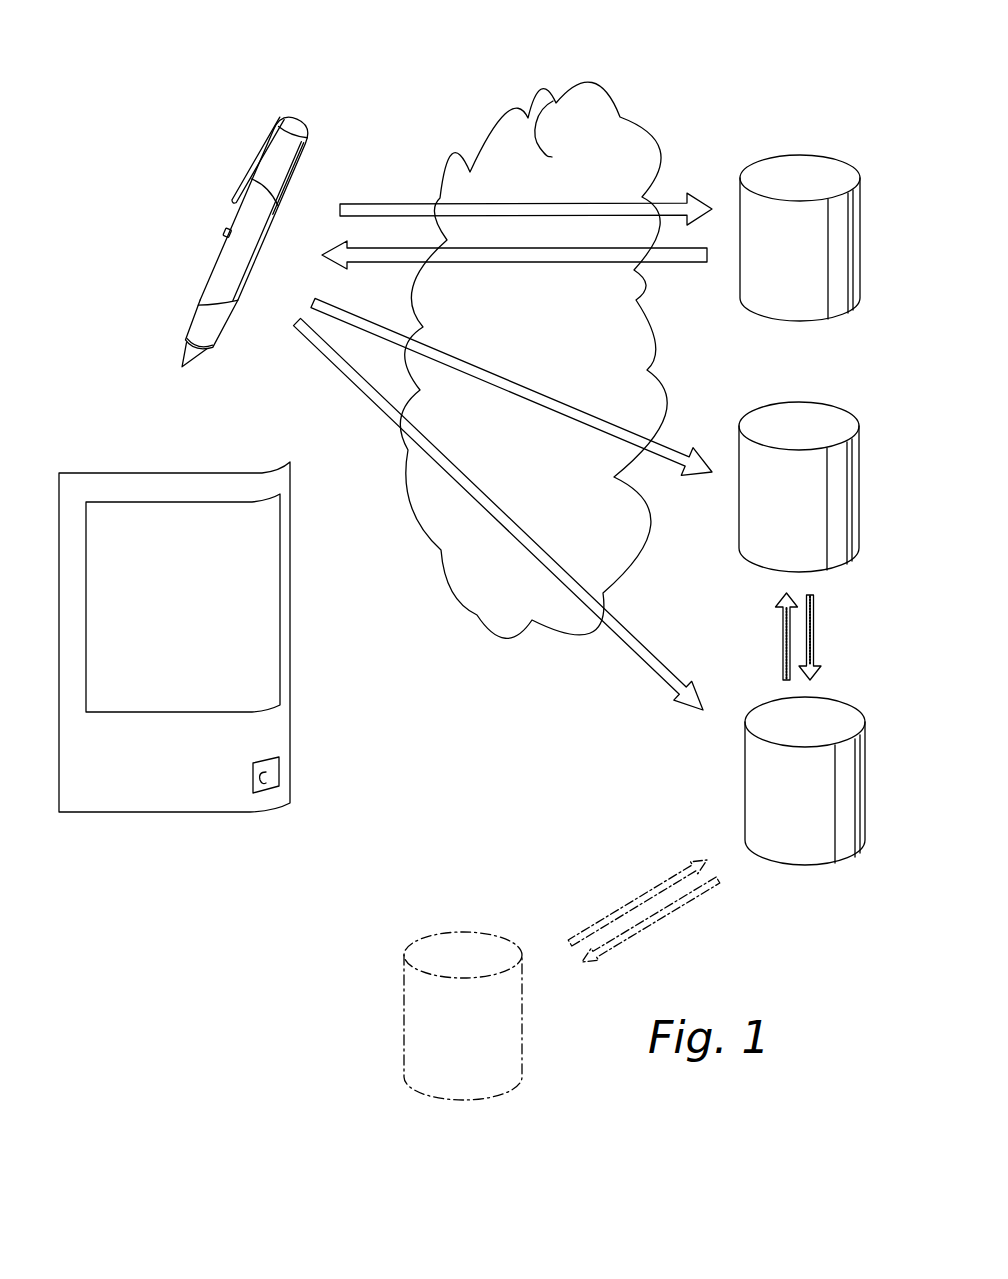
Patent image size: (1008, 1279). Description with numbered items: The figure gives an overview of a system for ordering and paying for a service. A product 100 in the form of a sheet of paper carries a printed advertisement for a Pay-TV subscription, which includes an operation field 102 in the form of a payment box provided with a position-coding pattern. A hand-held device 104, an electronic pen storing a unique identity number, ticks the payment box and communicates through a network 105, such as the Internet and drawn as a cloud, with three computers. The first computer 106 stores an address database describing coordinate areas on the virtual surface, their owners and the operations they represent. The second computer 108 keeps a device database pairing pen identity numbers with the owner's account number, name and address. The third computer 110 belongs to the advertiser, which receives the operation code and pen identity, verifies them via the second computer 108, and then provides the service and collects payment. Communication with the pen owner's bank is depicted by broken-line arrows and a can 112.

The product 100 is at (188, 470).
The operation field 102 is at (260, 777).
The hand-held device 104 is at (215, 263).
The network 105 is at (553, 100).
The first computer 106 is at (787, 172).
The second computer 108 is at (790, 427).
The third computer 110 is at (773, 797).
The can 112 is at (447, 1047).